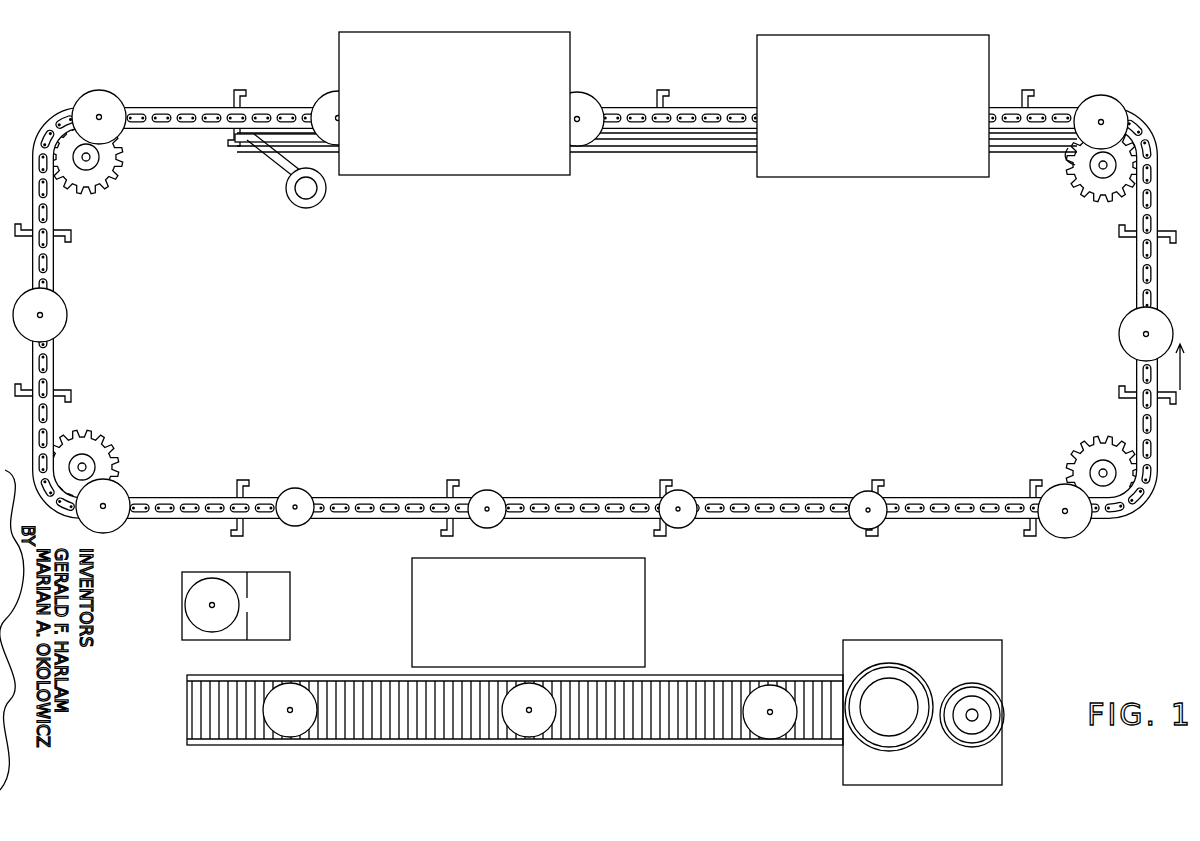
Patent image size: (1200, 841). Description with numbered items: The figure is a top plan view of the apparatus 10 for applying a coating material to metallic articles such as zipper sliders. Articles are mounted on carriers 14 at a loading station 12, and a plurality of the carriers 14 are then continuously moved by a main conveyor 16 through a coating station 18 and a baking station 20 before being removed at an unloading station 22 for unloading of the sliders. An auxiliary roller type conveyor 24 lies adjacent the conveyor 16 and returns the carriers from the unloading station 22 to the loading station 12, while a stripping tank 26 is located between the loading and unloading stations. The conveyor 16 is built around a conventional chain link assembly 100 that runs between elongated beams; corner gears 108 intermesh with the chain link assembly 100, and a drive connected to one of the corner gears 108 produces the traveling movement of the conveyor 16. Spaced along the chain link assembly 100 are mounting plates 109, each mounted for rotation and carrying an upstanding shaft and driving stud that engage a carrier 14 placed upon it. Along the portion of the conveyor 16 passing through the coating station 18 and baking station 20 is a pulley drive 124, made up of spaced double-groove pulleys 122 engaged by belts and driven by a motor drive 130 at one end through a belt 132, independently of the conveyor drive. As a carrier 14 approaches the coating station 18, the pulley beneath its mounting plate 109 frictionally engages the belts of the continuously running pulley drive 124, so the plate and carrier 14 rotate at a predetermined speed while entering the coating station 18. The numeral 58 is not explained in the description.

The apparatus 10 is at (1163, 98).
The loading station 12 is at (1010, 670).
The carrier 14 is at (112, 96).
The main conveyor 16 is at (1162, 282).
The coating station 18 is at (994, 78).
The baking station 20 is at (556, 70).
The unloading station 22 is at (182, 637).
The auxiliary roller type conveyor 24 is at (390, 745).
The stripping tank 26 is at (645, 612).
The drive pulley 58 is at (905, 660).
The chain link assembly 100 is at (577, 500).
The corner gear 108 is at (102, 168).
The mounting plate 109 is at (297, 500).
The pulley 122 is at (255, 148).
The pulley drive 124 is at (680, 153).
The motor drive 130 is at (318, 206).
The belt 132 is at (278, 165).